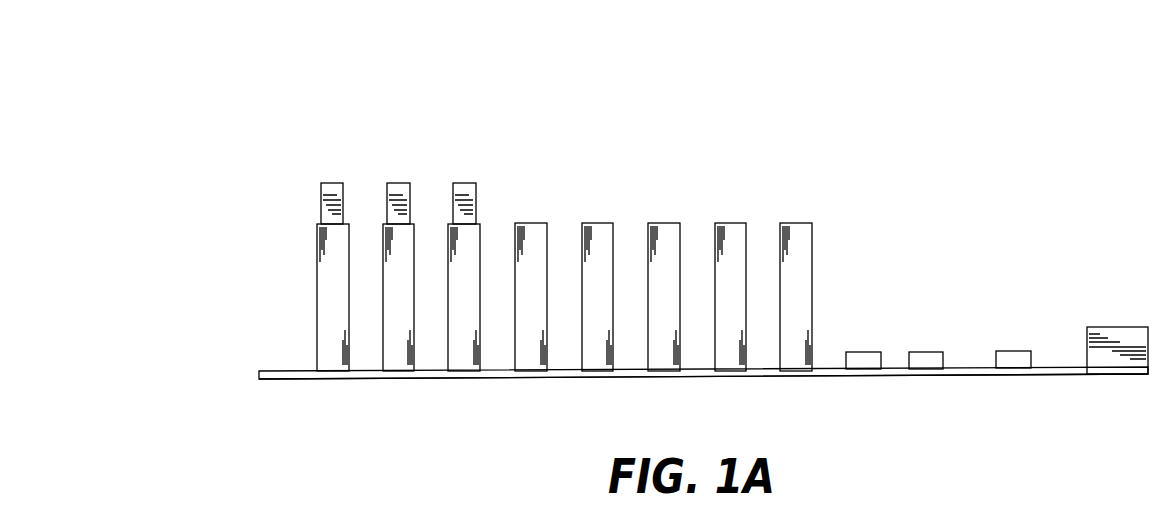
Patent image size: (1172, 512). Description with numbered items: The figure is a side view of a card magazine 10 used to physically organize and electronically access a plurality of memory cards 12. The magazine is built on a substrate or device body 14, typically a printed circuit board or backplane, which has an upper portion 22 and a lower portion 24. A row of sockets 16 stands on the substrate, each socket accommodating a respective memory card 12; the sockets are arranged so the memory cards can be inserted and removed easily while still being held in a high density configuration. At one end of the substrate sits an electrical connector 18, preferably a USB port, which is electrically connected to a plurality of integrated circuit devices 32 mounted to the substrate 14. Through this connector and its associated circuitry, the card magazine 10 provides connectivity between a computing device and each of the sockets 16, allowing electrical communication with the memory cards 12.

The card magazine 10 is at (1066, 113).
The memory cards 12 is at (465, 185).
The substrate or device body 14 is at (966, 403).
The sockets 16 is at (665, 222).
The electrical connector 18 is at (1118, 330).
The upper portion 22 is at (273, 370).
The lower portion 24 is at (297, 380).
The integrated circuit devices 32 is at (931, 376).